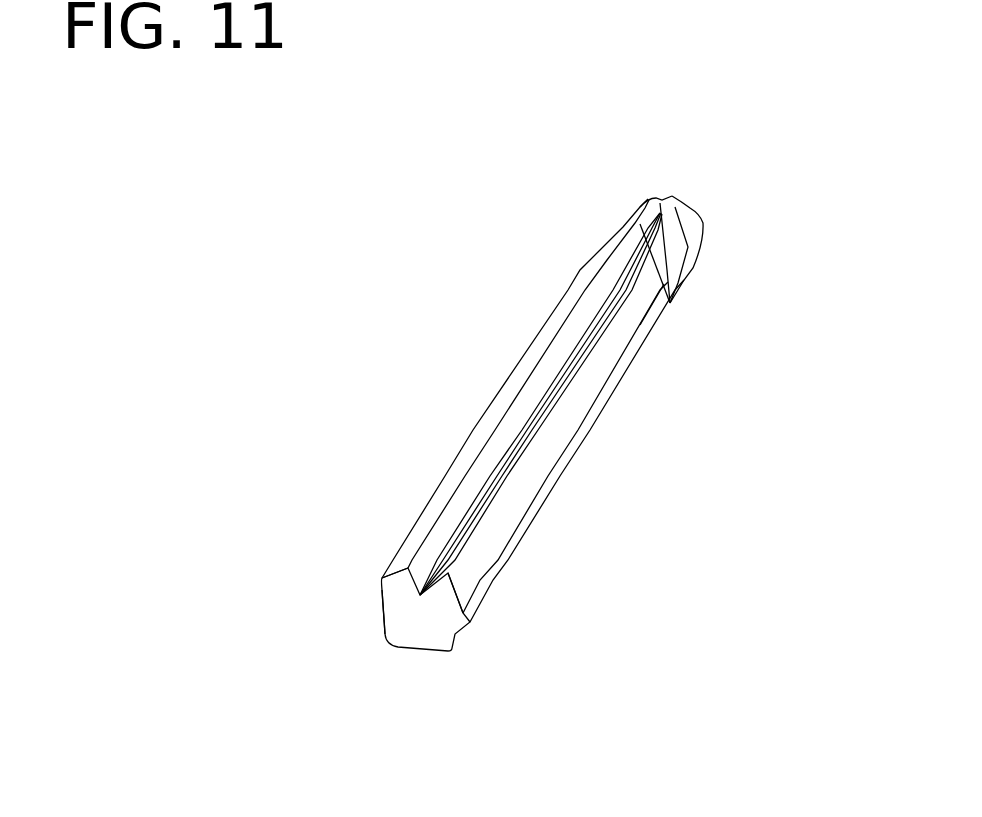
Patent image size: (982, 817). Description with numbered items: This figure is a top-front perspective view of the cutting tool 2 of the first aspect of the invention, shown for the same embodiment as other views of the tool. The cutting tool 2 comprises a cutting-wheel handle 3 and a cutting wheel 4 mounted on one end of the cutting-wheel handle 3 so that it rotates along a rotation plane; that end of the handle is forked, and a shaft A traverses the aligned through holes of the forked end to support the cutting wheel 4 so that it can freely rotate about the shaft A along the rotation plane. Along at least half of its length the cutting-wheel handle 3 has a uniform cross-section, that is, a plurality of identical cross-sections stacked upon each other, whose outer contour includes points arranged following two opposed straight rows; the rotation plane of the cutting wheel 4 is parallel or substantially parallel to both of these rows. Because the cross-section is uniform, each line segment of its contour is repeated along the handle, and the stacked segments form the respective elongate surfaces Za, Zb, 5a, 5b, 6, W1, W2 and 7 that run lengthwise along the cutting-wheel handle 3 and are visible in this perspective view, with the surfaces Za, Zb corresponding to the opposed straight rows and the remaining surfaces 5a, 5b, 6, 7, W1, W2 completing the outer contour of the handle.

The cutting tool 2 is at (322, 341).
The cutting-wheel handle 3 is at (662, 362).
The cutting wheel 4 is at (676, 196).
The shaft A is at (706, 226).
The surface 5a is at (412, 530).
The surface 5b is at (477, 558).
The surface 6 is at (397, 642).
The surface 7 is at (470, 523).
The surface Za is at (382, 620).
The surface Zb is at (613, 395).
The surface W1 is at (382, 598).
The surface W2 is at (448, 573).